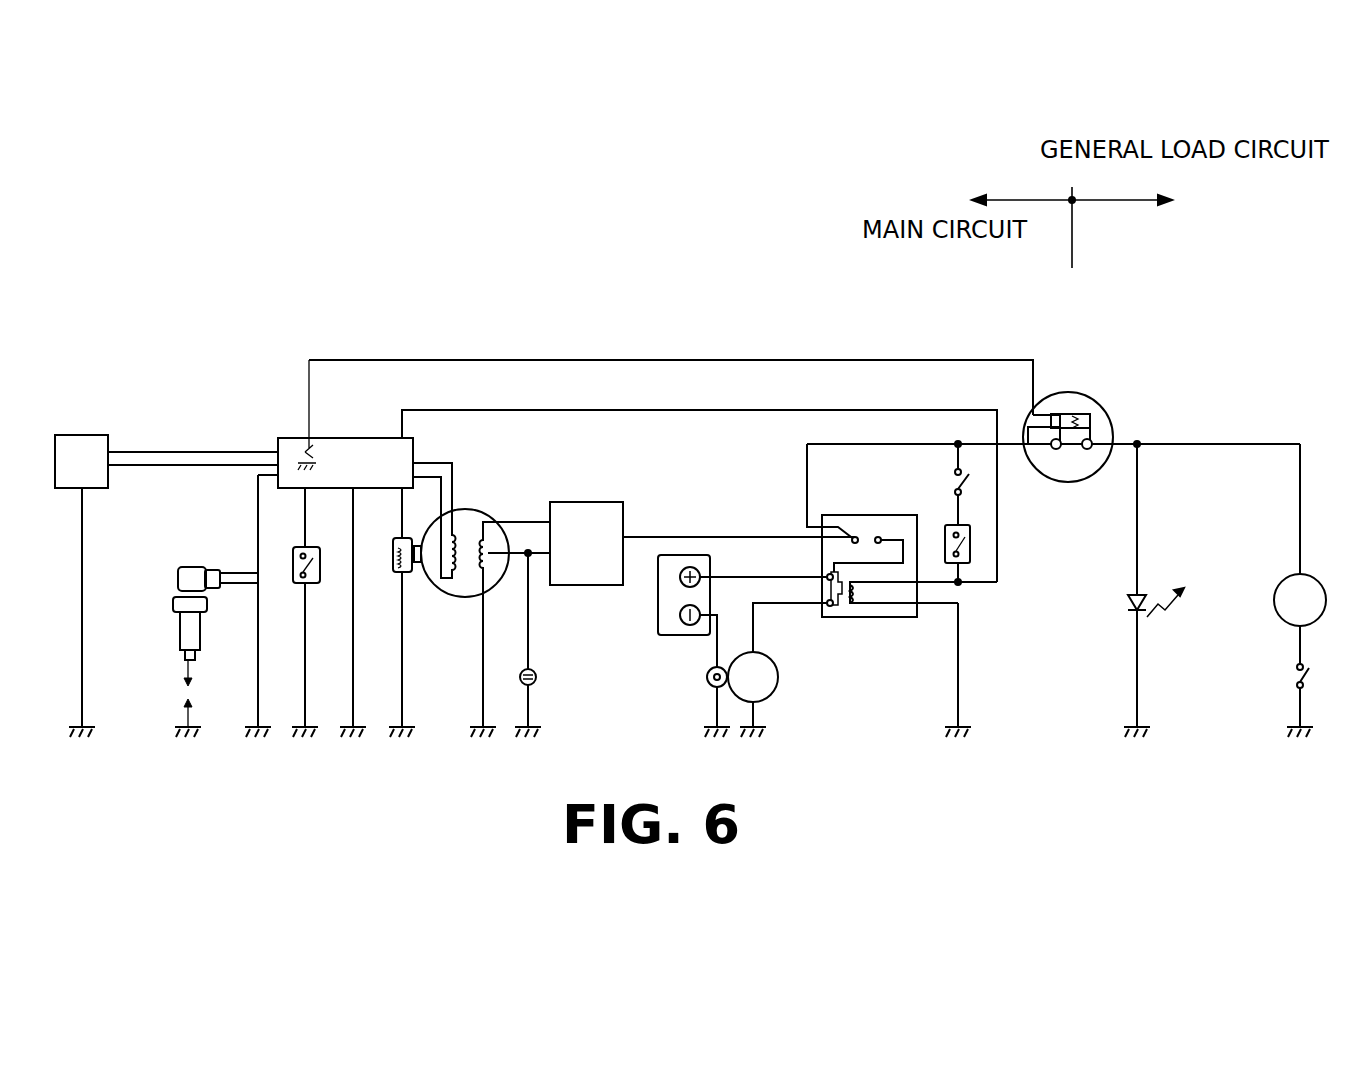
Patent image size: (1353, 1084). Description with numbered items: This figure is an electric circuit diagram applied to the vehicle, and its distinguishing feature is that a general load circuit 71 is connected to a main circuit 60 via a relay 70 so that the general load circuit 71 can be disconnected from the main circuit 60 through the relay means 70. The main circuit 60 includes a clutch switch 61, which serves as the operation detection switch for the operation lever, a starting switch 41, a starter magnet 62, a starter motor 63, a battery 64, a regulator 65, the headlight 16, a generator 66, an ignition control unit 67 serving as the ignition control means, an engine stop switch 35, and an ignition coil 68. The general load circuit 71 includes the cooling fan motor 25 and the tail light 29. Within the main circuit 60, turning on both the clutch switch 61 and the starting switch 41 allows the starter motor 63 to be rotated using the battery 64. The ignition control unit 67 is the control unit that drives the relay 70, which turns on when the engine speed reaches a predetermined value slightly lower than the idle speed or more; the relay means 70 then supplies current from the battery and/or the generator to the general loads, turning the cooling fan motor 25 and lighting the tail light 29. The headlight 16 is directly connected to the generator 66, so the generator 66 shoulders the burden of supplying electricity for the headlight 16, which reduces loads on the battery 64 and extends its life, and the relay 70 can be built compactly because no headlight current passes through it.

The main circuit 60 is at (52, 281).
The general load circuit 71 is at (1107, 281).
The ignition control unit 67 is at (360, 432).
The ignition coil 68 is at (180, 630).
The engine stop switch 35 is at (320, 580).
The generator 66 is at (445, 597).
The headlight 16 is at (536, 677).
The regulator 65 is at (588, 500).
The battery 64 is at (683, 638).
The starter motor 63 is at (773, 693).
The starter magnet 62 is at (878, 617).
The clutch switch 61 is at (968, 485).
The starting switch 41 is at (970, 548).
The relay 70 is at (1070, 482).
The tail light 29 is at (1133, 613).
The cooling fan motor 25 is at (1280, 615).